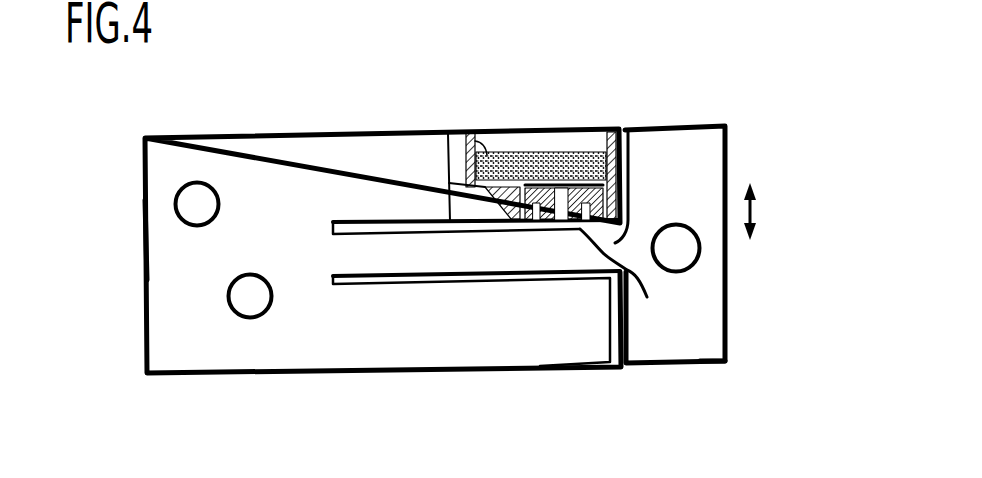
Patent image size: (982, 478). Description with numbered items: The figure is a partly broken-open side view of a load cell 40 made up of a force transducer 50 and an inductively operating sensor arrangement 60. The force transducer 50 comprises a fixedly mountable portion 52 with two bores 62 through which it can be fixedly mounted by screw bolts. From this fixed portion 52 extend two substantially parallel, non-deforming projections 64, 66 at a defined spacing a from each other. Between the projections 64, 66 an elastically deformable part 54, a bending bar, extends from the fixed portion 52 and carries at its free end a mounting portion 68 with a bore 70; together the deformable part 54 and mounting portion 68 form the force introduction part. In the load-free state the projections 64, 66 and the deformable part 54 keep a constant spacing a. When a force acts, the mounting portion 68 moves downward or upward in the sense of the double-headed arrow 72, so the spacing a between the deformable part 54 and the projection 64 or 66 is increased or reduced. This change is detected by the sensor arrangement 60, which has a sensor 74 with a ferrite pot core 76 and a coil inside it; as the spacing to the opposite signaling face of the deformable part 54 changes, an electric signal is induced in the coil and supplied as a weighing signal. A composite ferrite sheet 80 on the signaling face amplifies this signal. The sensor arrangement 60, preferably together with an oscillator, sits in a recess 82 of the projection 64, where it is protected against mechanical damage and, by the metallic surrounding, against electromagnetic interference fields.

The load cell 40 is at (757, 285).
The force transducer 50 is at (365, 110).
The fixedly mountable portion 52 is at (117, 239).
The elastically deformable part 54 is at (628, 238).
The sensor arrangement 60 is at (517, 120).
The bores 62 is at (212, 210).
The projection 64 is at (298, 167).
The projection 66 is at (427, 355).
The mounting portion 68 is at (712, 352).
The bore 70 is at (685, 267).
The double-headed arrow 72 is at (755, 213).
The sensor 74 is at (522, 112).
The ferrite pot core 76 is at (582, 142).
The composite ferrite sheet 80 is at (647, 297).
The recess 82 is at (449, 183).
The spacing a is at (555, 283).